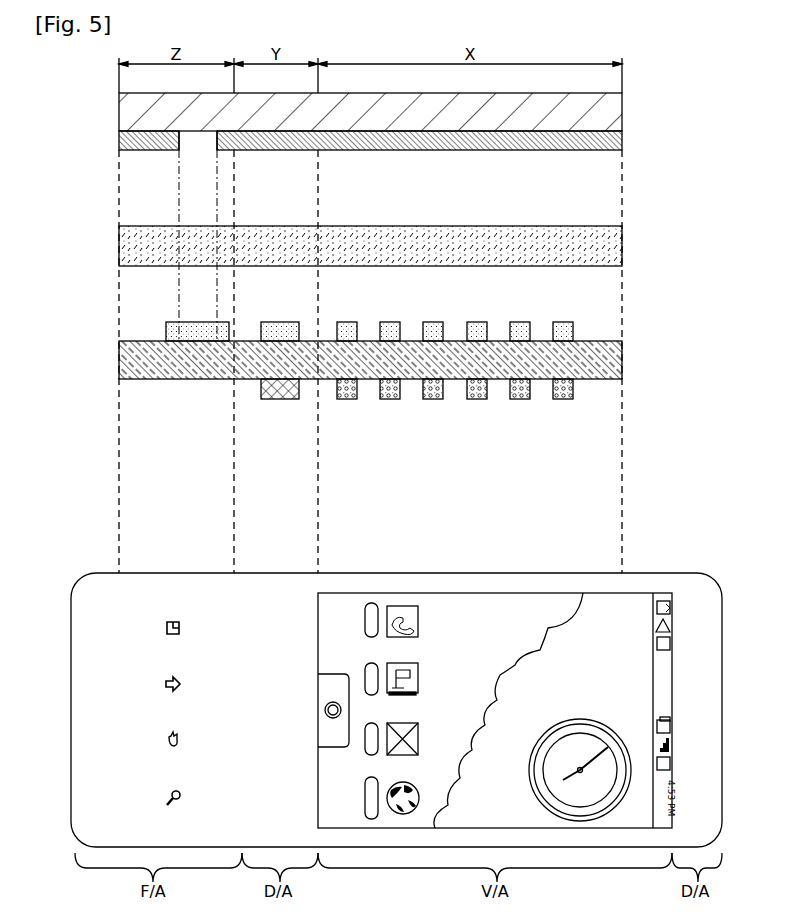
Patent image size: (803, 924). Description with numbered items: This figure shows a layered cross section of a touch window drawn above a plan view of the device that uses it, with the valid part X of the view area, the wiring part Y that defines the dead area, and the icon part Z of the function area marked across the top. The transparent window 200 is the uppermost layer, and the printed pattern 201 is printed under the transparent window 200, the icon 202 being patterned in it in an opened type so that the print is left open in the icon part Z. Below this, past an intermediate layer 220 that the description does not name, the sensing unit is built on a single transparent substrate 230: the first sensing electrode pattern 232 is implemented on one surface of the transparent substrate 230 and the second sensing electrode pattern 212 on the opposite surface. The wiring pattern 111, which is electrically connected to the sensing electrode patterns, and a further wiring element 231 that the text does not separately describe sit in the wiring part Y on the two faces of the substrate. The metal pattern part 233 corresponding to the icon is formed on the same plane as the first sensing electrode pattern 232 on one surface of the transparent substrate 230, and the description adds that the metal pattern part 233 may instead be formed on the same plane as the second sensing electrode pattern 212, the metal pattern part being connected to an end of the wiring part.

The transparent window 200 is at (620, 111).
The printed layer 201 is at (620, 138).
The icon 202 is at (198, 147).
The adhesive layer 220 is at (622, 248).
The transparent substrate 230 is at (618, 360).
The touch key electrode 231 is at (281, 322).
The first sensing electrode pattern 232 is at (567, 322).
The metal pattern part 233 is at (166, 328).
The wiring pattern 111 is at (280, 400).
The second sensing electrode pattern 212 is at (565, 400).